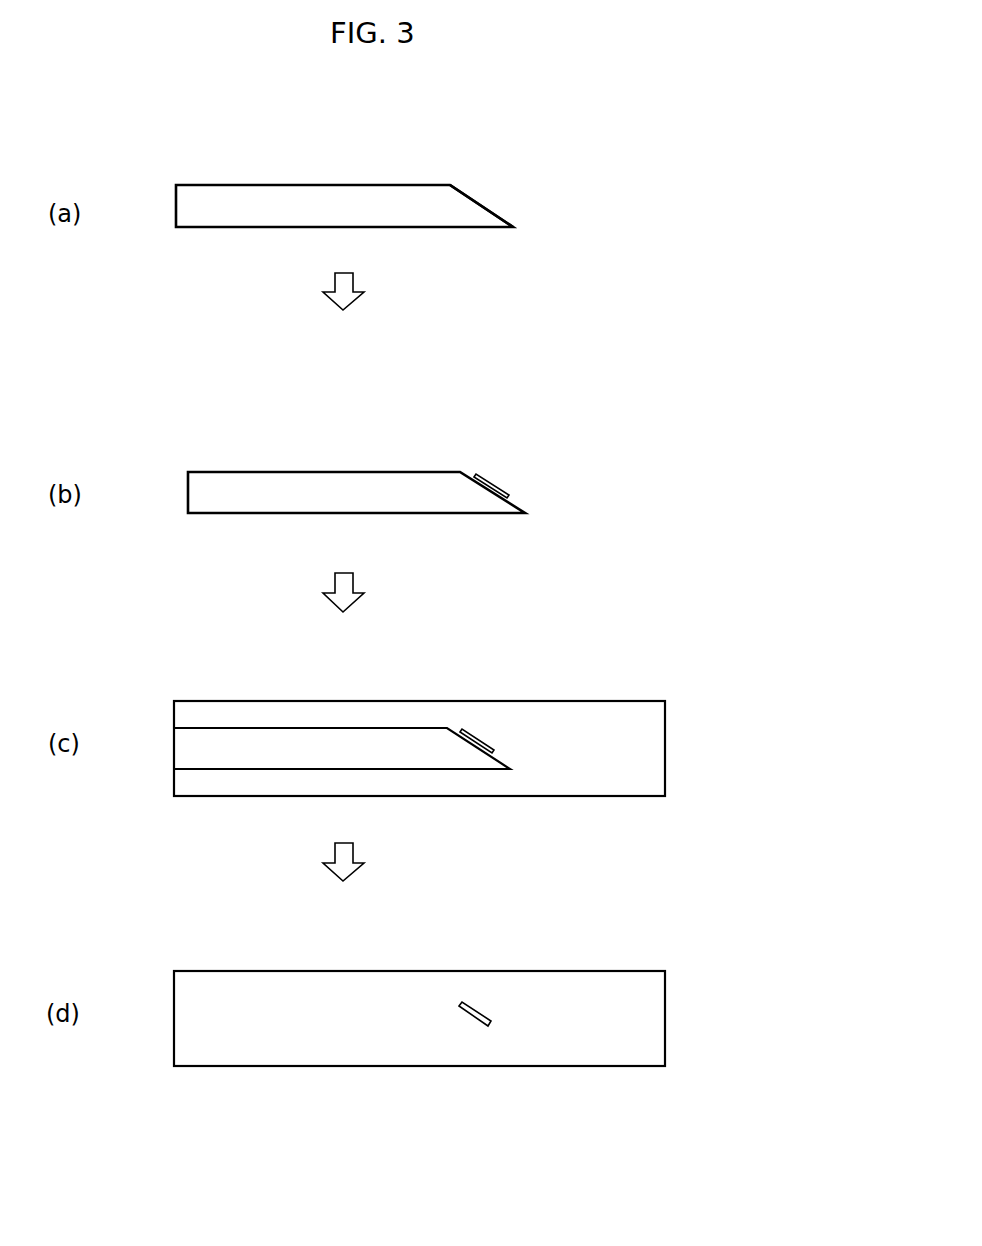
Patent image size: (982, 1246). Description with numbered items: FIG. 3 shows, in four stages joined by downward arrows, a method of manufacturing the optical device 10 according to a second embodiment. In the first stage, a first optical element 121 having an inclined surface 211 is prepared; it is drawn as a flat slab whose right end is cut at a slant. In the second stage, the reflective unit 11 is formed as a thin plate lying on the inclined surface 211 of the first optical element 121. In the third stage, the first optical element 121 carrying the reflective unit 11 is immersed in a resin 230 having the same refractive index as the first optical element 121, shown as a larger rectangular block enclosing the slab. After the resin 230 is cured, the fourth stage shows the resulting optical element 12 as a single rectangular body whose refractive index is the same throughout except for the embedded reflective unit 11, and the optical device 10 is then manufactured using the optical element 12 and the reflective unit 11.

The first optical element 121 is at (340, 199).
The inclined surface 211 is at (472, 197).
The reflective unit 11 is at (490, 482).
The resin 230 is at (525, 715).
The optical element 12 is at (581, 985).
The optical device 10 is at (663, 1023).